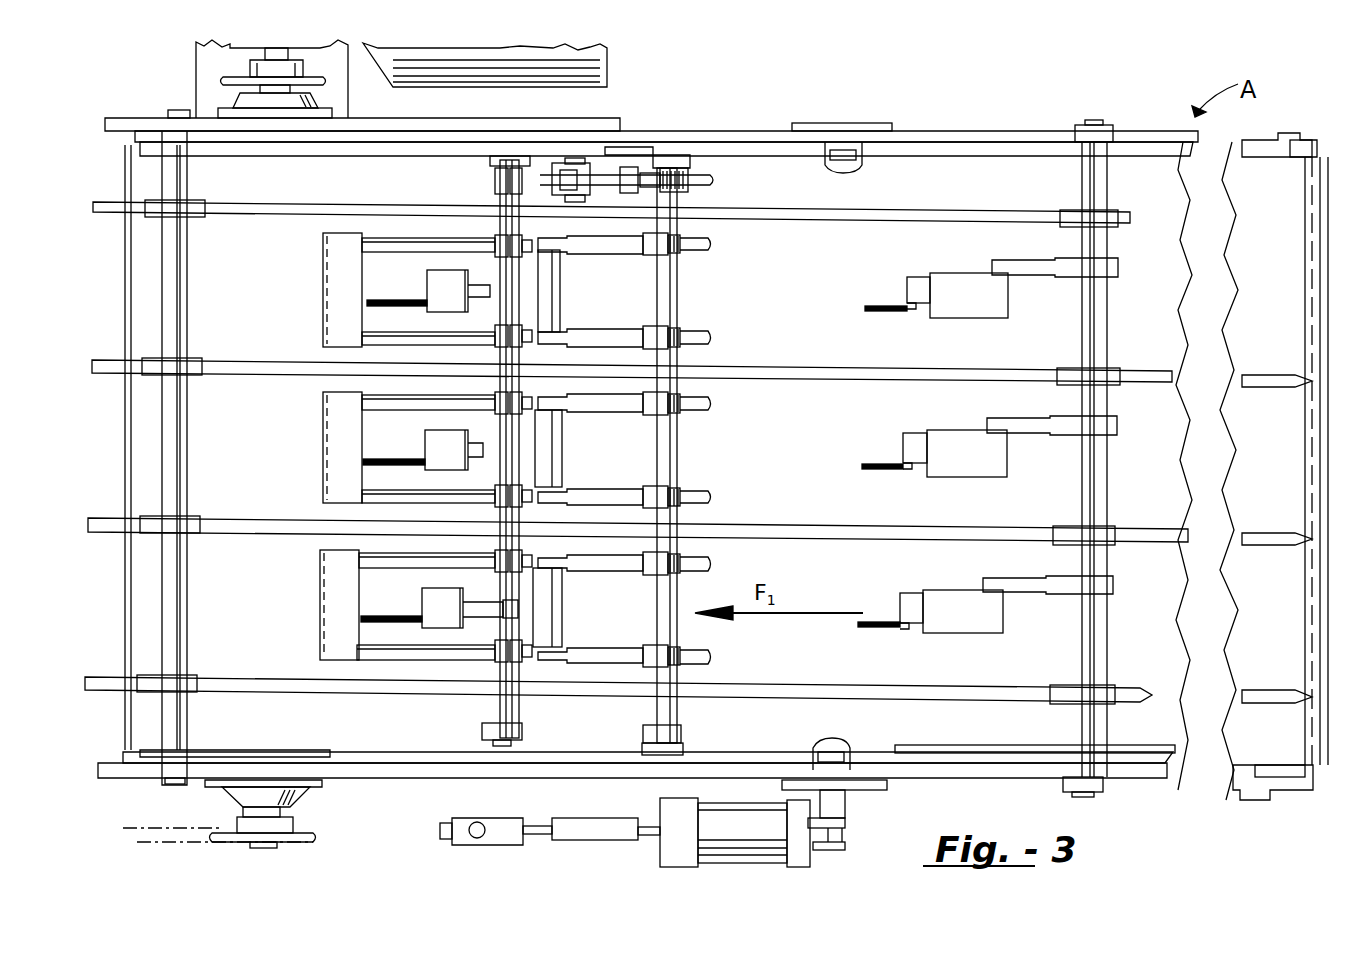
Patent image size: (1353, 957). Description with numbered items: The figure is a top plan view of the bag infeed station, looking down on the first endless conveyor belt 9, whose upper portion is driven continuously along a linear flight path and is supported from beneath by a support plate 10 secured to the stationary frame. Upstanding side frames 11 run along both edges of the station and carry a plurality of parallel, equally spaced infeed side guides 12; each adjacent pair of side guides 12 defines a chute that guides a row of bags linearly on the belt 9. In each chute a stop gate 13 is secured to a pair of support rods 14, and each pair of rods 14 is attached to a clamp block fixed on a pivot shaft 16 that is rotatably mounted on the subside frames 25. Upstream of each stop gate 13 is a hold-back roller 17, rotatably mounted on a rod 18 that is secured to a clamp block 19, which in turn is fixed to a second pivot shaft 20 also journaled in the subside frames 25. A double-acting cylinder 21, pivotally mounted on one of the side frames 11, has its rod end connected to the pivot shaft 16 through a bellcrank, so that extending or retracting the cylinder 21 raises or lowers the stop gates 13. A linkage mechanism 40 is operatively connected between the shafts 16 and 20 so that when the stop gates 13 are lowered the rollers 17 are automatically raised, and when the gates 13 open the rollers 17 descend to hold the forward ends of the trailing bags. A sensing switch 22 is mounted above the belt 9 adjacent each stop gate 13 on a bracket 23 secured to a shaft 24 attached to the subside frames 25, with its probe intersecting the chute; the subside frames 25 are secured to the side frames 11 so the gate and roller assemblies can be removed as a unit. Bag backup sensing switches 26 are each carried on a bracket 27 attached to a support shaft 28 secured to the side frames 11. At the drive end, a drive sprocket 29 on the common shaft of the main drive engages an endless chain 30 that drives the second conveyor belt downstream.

The first endless conveyor belt 9 is at (496, 164).
The support plate 10 is at (960, 142).
The side frames 11 is at (928, 142).
The infeed side guides 12 is at (767, 372).
The stop gates 13 is at (322, 436).
The support rods 14 is at (383, 490).
The pivot shaft 16 is at (498, 708).
The hold-back roller 17 is at (543, 610).
The rod 18 is at (607, 404).
The clamp block 19 is at (655, 252).
The pivot shaft 20 is at (668, 453).
The double-acting cylinder 21 is at (740, 825).
The sensing switch 22 is at (460, 303).
The bracket 23 is at (481, 600).
The shaft 24 is at (495, 632).
The subside frames 25 is at (786, 143).
The bag backup sensing switches 26 is at (975, 308).
The bracket 27 is at (1036, 586).
The support shaft 28 is at (1088, 634).
The drive sprocket 29 is at (315, 838).
The endless chain 30 is at (182, 840).
The linkage mechanism 40 is at (612, 168).